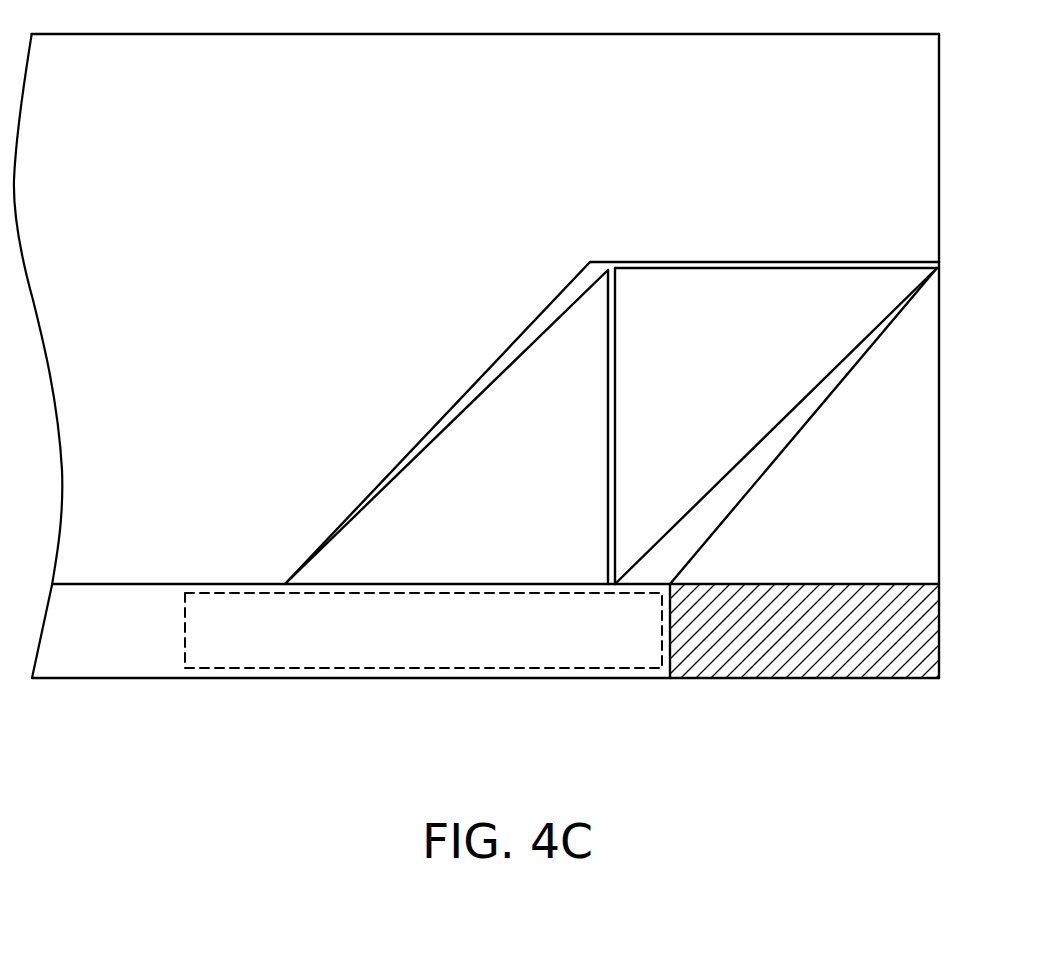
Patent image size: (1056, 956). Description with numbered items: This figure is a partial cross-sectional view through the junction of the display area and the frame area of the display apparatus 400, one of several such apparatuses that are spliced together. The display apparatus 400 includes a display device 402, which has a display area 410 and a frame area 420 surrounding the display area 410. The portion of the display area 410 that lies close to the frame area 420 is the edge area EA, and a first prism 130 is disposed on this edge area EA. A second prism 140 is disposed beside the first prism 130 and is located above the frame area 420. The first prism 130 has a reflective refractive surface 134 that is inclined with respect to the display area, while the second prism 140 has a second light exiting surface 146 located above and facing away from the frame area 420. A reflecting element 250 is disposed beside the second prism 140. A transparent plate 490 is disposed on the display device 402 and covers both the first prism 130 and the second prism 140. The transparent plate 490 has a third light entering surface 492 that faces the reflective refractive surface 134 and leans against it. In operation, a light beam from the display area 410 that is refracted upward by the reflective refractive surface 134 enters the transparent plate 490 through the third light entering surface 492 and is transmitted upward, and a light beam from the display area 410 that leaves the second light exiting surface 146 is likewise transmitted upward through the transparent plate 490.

The display apparatus 400 is at (917, 740).
The transparent plate 490 is at (915, 120).
The second light exiting surface 146 is at (875, 268).
The reflective refractive surface 134 is at (546, 327).
The third light entering surface 492 is at (479, 387).
The second prism 140 is at (790, 338).
The reflecting element 250 is at (902, 452).
The first prism 130 is at (490, 557).
The display device 402 is at (531, 666).
The display area 410 is at (117, 680).
The frame area 420 is at (762, 672).
The edge area EA is at (247, 670).